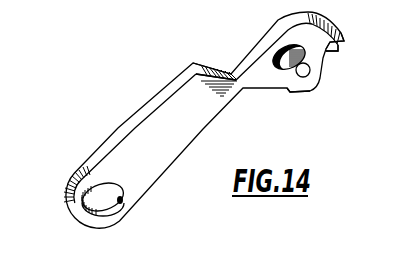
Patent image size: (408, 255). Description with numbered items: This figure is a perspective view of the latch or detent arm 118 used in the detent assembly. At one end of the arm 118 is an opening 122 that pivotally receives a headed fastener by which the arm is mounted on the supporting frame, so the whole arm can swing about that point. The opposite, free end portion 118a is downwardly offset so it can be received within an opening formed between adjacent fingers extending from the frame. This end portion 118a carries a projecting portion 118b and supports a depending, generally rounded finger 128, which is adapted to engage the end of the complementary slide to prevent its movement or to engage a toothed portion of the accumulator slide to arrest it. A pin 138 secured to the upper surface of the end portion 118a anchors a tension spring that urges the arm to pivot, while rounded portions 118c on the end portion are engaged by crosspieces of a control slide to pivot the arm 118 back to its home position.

The latch or detent arm 118 is at (171, 106).
The free end portion 118a is at (247, 62).
The projecting portion 118b is at (343, 39).
The rounded portion 118c is at (313, 92).
The opening 122 is at (121, 202).
The depending finger 128 is at (288, 49).
The pin 138 is at (310, 69).